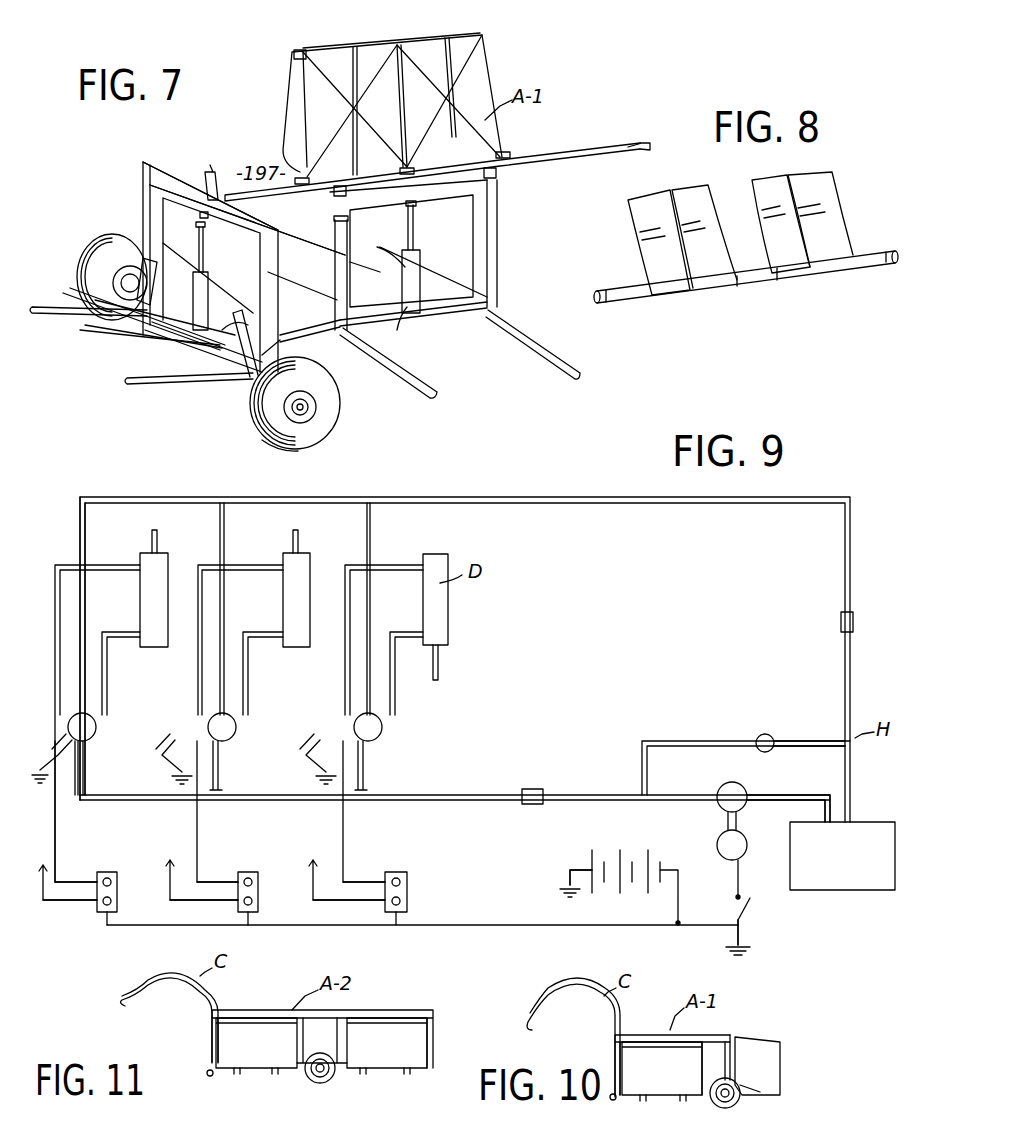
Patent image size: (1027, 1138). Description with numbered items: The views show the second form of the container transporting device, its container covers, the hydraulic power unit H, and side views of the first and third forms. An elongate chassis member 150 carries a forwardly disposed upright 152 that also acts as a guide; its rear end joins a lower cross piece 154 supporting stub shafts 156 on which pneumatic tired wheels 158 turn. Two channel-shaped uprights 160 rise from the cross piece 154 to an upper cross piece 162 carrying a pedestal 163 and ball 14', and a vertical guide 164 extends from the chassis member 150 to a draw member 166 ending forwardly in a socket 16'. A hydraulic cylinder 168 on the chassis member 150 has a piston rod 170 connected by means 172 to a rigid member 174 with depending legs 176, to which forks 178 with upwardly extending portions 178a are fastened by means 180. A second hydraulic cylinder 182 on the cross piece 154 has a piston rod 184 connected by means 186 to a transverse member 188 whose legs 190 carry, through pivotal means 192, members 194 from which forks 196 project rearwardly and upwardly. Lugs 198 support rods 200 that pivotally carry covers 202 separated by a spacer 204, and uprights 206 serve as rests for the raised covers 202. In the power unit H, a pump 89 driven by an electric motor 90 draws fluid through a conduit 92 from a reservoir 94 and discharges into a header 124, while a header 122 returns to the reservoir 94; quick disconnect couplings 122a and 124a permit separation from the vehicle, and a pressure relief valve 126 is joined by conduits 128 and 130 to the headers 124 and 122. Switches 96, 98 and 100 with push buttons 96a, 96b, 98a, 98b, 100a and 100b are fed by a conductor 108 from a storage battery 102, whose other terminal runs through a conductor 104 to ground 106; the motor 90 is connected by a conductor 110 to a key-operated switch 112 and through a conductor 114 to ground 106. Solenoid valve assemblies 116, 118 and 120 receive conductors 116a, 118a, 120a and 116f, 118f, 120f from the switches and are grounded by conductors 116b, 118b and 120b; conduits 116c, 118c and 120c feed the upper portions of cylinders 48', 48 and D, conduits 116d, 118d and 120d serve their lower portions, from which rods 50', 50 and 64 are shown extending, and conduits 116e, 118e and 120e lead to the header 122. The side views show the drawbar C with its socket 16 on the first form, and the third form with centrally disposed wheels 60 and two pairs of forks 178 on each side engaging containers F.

In FIG. 7, the ball 14' is at (232, 159).
In FIG. 11, the socket 16 is at (165, 1006).
In FIG. 10, the socket 16 is at (564, 1036).
In FIG. 7, the socket 16' is at (656, 127).
In FIG. 9, the hydraulic cylinder 48 is at (277, 600).
In FIG. 9, the hydraulic cylinder 48' is at (134, 600).
In FIG. 9, the piston rod 50 is at (273, 539).
In FIG. 9, the piston rod 50' is at (131, 530).
In FIG. 11, the wheel 60 is at (318, 1084).
In FIG. 9, the piston rod of cylinder D 64 is at (440, 668).
In FIG. 9, the pump 89 is at (718, 810).
In FIG. 9, the electric motor 90 is at (750, 850).
In FIG. 9, the conduit 92 is at (785, 790).
In FIG. 9, the hydraulic fluid reservoir 94 is at (842, 856).
In FIG. 9, the electric switch 96 is at (115, 878).
In FIG. 9, the push button 96a is at (95, 882).
In FIG. 9, the push button 96b is at (100, 905).
In FIG. 9, the electric switch 98 is at (262, 878).
In FIG. 9, the push button 98a is at (240, 882).
In FIG. 9, the push button 98b is at (248, 905).
In FIG. 9, the electric switch 100 is at (405, 876).
In FIG. 9, the push button 100a is at (402, 880).
In FIG. 9, the push button 100b is at (402, 898).
In FIG. 9, the storage battery 102 is at (612, 850).
In FIG. 9, the conductor 104 is at (580, 862).
In FIG. 9, the ground 106 is at (40, 785).
In FIG. 9, the conductor 108 is at (110, 925).
In FIG. 9, the conductor 110 is at (742, 882).
In FIG. 9, the switch 112 is at (752, 910).
In FIG. 9, the conductor 114 is at (745, 935).
In FIG. 9, the solenoid valve assembly 116 is at (97, 730).
In FIG. 9, the conductor 116a is at (58, 844).
In FIG. 9, the conductor 116b is at (84, 758).
In FIG. 7, the conduit 116c is at (150, 322).
In FIG. 9, the conduit 116c is at (50, 570).
In FIG. 7, the conduit 116d is at (160, 335).
In FIG. 9, the conduit 116d is at (108, 632).
In FIG. 9, the conduit 116e is at (75, 505).
In FIG. 9, the conductor 116f is at (77, 774).
In FIG. 9, the solenoid valve assembly 118 is at (236, 732).
In FIG. 9, the conductor 118a is at (200, 838).
In FIG. 9, the conductor 118b is at (200, 740).
In FIG. 9, the conduit 118c is at (200, 690).
In FIG. 7, the conduit 118d is at (398, 335).
In FIG. 9, the conduit 118d is at (250, 688).
In FIG. 7, the conduit 118e is at (395, 268).
In FIG. 9, the conduit 118e is at (225, 518).
In FIG. 9, the conductor 118f is at (220, 760).
In FIG. 9, the solenoid valve assembly 120 is at (385, 732).
In FIG. 9, the conductor 120a is at (348, 836).
In FIG. 9, the conductor 120b is at (335, 748).
In FIG. 9, the conduit 120c is at (345, 708).
In FIG. 9, the conduit 120d is at (398, 710).
In FIG. 9, the conduit 120e is at (372, 518).
In FIG. 9, the conductor 120f is at (370, 760).
In FIG. 9, the header 122 is at (582, 497).
In FIG. 9, the quick disconnect coupling 122a is at (838, 622).
In FIG. 9, the header 124 is at (500, 793).
In FIG. 9, the quick disconnect coupling 124a is at (536, 804).
In FIG. 9, the pressure relief valve 126 is at (765, 734).
In FIG. 9, the conduit 128 is at (642, 766).
In FIG. 9, the conduit 130 is at (810, 740).
In FIG. 7, the chassis member 150 is at (328, 340).
In FIG. 7, the upright 152 is at (500, 254).
In FIG. 7, the cross piece 154 is at (150, 340).
In FIG. 7, the stub shaft 156 is at (316, 406).
In FIG. 7, the pneumatic tired wheel 158 is at (260, 448).
In FIG. 7, the upright 160 is at (143, 178).
In FIG. 7, the upper cross piece 162 is at (172, 168).
In FIG. 7, the pedestal 163 is at (165, 190).
In FIG. 7, the vertical guide 164 is at (272, 268).
In FIG. 7, the draw member 166 is at (545, 170).
In FIG. 7, the hydraulic cylinder 168 is at (421, 255).
In FIG. 7, the piston rod 170 is at (416, 230).
In FIG. 7, the conventional connecting means 172 is at (416, 210).
In FIG. 7, the rigid member 174 is at (380, 200).
In FIG. 7, the leg 176 is at (352, 240).
In FIG. 7, the fork 178 is at (410, 368).
In FIG. 11, the fork 178 is at (275, 1075).
In FIG. 10, the fork 178 is at (683, 1100).
In FIG. 7, the upwardly extending portion 178a is at (490, 240).
In FIG. 7, the conventional fastening means 180 is at (336, 242).
In FIG. 7, the hydraulic cylinder 182 is at (214, 284).
In FIG. 7, the piston rod 184 is at (204, 256).
In FIG. 7, the conventional connecting means 186 is at (198, 228).
In FIG. 7, the transverse member 188 is at (248, 212).
In FIG. 7, the leg 190 is at (146, 220).
In FIG. 7, the pivotal means 192 is at (250, 382).
In FIG. 7, the member 194 is at (120, 290).
In FIG. 7, the fork 196 is at (58, 318).
In FIG. 10, the fork 196 is at (762, 1096).
In FIG. 7, the lug 198 is at (308, 178).
In FIG. 8, the rod 200 is at (600, 305).
In FIG. 7, the cover 202 is at (418, 60).
In FIG. 8, the cover 202 is at (648, 200).
In FIG. 8, the spacer 204 is at (752, 283).
In FIG. 7, the upright 206 is at (300, 50).